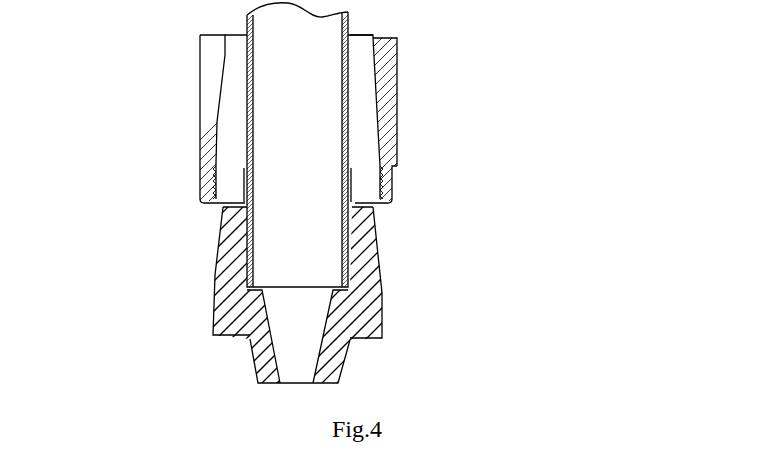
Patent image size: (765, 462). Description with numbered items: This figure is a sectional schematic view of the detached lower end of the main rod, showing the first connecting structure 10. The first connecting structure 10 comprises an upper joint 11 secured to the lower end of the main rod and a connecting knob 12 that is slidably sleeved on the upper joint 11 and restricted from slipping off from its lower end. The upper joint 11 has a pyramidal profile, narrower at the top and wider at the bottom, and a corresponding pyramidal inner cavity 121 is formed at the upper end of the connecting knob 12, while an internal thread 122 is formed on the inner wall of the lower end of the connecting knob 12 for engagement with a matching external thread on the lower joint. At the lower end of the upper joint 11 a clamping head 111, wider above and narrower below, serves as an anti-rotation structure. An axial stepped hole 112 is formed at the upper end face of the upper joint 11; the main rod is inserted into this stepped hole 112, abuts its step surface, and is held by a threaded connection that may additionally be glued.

The first connecting structure 10 is at (362, 231).
The upper joint 11 is at (282, 231).
The clamping head 111 is at (253, 373).
The stepped hole 112 is at (221, 267).
The connecting knob 12 is at (297, 231).
The pyramidal inner cavity 121 is at (200, 103).
The internal thread 122 is at (199, 177).